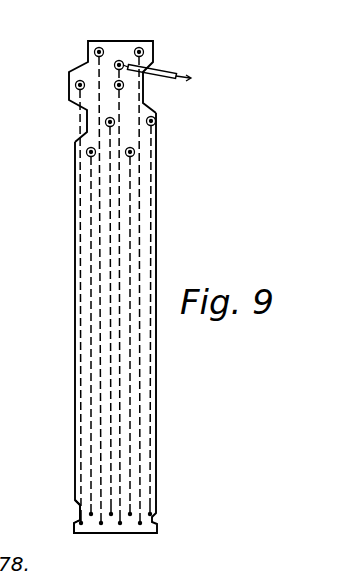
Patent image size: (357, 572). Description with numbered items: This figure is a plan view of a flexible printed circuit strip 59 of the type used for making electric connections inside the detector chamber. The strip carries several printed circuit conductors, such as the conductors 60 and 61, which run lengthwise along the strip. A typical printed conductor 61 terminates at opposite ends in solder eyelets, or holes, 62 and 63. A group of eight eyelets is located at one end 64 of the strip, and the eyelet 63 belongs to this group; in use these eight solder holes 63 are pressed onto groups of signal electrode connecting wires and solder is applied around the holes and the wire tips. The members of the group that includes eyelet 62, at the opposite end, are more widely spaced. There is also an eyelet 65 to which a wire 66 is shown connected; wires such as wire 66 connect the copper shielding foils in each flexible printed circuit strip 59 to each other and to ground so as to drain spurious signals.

The flexible printed circuit strip 59 is at (172, 275).
The printed circuit conductor 60 is at (143, 162).
The printed circuit conductor 61 is at (143, 201).
The solder eyelet 62 is at (157, 113).
The solder eyelet 63 is at (151, 513).
The end of the strip 64 is at (89, 536).
The eyelet 65 is at (121, 60).
The wire 66 is at (163, 63).